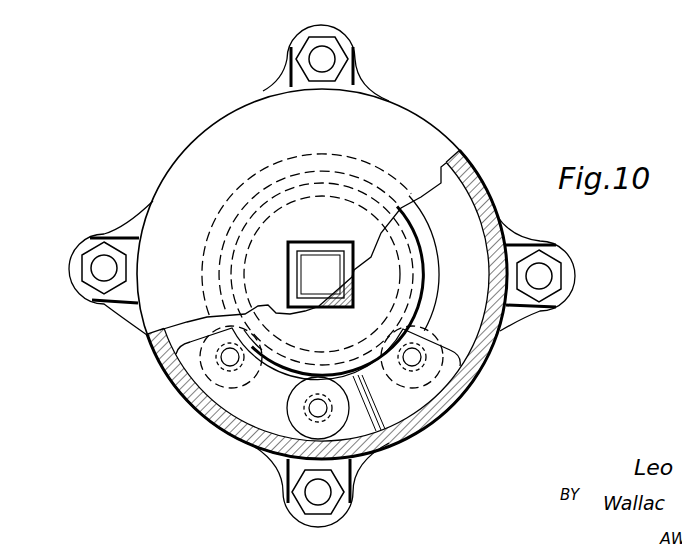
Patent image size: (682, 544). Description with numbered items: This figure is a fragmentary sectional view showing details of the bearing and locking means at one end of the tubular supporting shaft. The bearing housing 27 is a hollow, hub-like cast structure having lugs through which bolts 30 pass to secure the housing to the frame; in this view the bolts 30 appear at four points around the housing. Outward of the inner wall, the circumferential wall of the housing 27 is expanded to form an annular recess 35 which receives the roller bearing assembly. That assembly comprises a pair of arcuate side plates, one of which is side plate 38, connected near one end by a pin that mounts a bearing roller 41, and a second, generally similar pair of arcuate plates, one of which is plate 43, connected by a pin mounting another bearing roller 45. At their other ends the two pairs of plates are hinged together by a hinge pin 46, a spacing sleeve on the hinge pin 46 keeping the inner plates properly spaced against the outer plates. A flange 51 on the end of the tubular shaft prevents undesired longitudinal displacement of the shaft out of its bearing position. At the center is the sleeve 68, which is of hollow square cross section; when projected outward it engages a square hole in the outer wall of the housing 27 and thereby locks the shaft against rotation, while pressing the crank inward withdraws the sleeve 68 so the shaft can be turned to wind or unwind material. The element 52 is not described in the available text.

The bearing housing 27 is at (422, 119).
The bolts 30 is at (334, 53).
The annular recess 35 is at (477, 218).
The arcuate side plate 38 is at (198, 345).
The bearing roller 41 is at (256, 338).
The arcuate plate 43 is at (447, 322).
The bearing roller 45 is at (392, 339).
The hinge pin 46 is at (320, 408).
The flange 51 is at (485, 258).
The bolt hole boss 52 is at (283, 370).
The sleeve 68 is at (308, 261).